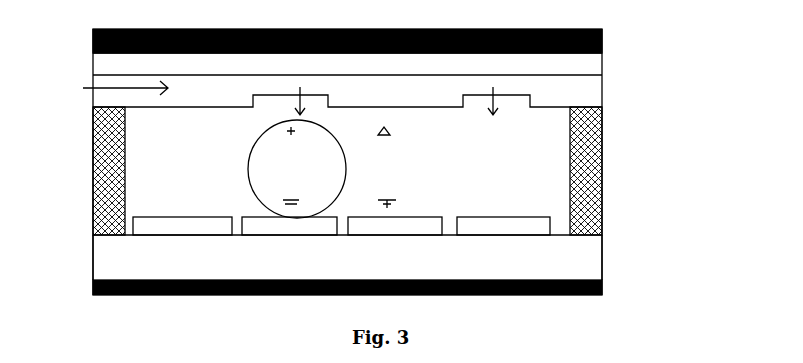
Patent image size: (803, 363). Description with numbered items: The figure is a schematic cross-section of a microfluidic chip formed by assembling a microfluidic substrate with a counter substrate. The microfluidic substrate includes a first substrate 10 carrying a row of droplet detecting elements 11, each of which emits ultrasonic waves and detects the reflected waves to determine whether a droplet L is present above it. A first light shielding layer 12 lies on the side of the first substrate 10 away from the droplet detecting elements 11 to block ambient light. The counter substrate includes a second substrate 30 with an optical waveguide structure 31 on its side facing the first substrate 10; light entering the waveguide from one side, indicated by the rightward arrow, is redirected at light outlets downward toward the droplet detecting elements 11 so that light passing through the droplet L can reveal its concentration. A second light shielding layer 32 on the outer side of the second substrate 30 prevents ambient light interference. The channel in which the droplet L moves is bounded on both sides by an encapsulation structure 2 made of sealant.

The second light shielding layer 32 is at (603, 36).
The second substrate 30 is at (603, 62).
The optical waveguide structure 31 is at (603, 96).
The encapsulation structure 2 is at (590, 156).
The droplet detecting element 11 is at (560, 233).
The first substrate 10 is at (588, 258).
The first light shielding layer 12 is at (603, 290).
The droplet L is at (256, 178).